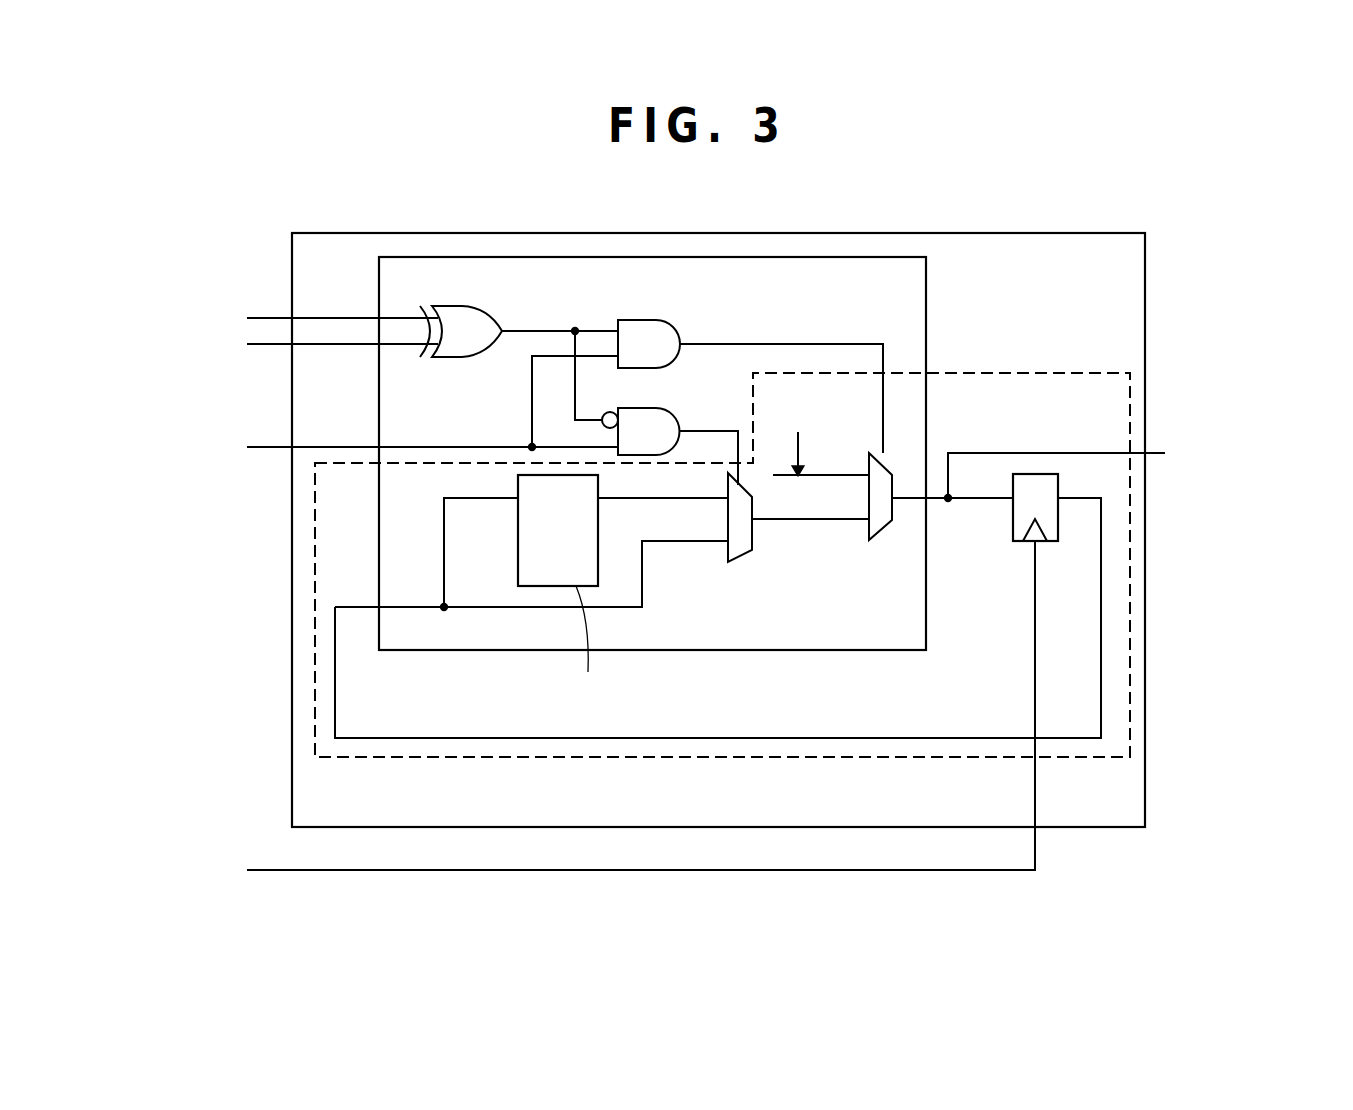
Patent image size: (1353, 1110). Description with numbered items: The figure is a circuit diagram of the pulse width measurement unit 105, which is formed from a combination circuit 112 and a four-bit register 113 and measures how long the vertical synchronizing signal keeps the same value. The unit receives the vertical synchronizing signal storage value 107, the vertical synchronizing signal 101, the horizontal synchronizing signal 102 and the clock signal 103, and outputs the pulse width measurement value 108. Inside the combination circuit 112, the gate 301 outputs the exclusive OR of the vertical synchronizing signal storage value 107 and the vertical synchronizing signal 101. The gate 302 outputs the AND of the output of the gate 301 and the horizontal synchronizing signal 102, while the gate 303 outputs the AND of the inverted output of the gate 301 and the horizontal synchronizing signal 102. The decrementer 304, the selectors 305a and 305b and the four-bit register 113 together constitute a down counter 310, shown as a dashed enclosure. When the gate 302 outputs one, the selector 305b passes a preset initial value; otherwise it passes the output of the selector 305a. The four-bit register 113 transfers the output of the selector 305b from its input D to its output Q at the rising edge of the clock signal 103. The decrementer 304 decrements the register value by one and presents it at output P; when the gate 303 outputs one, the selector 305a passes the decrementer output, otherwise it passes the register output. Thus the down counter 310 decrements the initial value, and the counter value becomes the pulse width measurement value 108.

The pulse width measurement unit 105 is at (1098, 233).
The combination circuit 112 is at (912, 297).
The down counter 310 is at (315, 700).
The vertical synchronizing signal storage value 107 is at (140, 228).
The vertical synchronizing signal 101 is at (130, 390).
The horizontal synchronizing signal 102 is at (130, 490).
The clock signal 103 is at (168, 855).
The pulse width measurement value 108 is at (1250, 418).
The gate 301 is at (480, 308).
The gate 302 is at (680, 322).
The gate 303 is at (695, 400).
The decrementer 304 is at (580, 540).
The selector 305a is at (748, 552).
The selector 305b is at (880, 540).
The 4-bit register 113 is at (1020, 545).